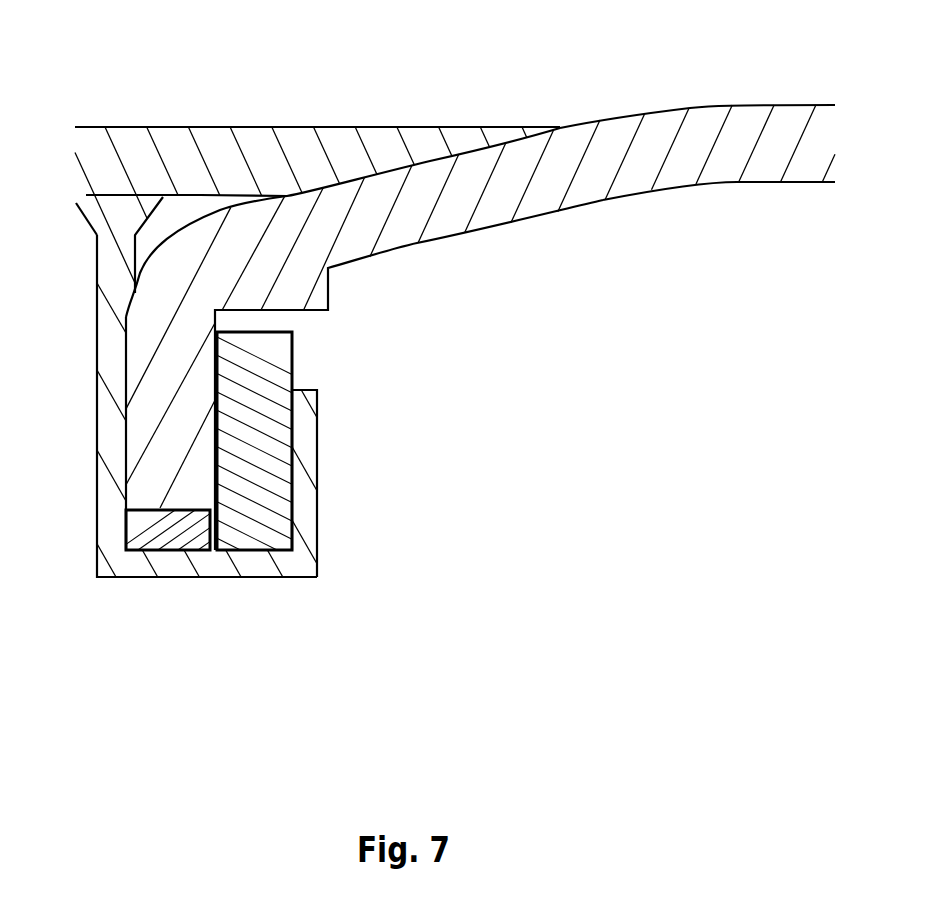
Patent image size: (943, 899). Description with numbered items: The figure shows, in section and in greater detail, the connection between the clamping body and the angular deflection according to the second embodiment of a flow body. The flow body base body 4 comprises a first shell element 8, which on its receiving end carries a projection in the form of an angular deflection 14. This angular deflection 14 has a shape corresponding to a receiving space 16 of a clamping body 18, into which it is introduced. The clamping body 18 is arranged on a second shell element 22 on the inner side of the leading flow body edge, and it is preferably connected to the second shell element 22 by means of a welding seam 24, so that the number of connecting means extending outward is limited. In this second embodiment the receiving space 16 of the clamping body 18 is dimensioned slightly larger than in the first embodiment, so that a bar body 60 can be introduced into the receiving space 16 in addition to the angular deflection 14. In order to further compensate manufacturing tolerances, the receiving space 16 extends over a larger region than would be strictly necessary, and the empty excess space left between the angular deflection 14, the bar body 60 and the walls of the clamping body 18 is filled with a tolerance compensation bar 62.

The flow body base body 4 is at (797, 278).
The first shell element 8 is at (708, 122).
The angular deflection 14 is at (163, 375).
The receiving space 16 is at (233, 553).
The clamping body 18 is at (140, 567).
The second shell element 22 is at (297, 152).
The welding seam 24 is at (141, 206).
The bar body 60 is at (263, 372).
The tolerance compensation bar 62 is at (167, 537).